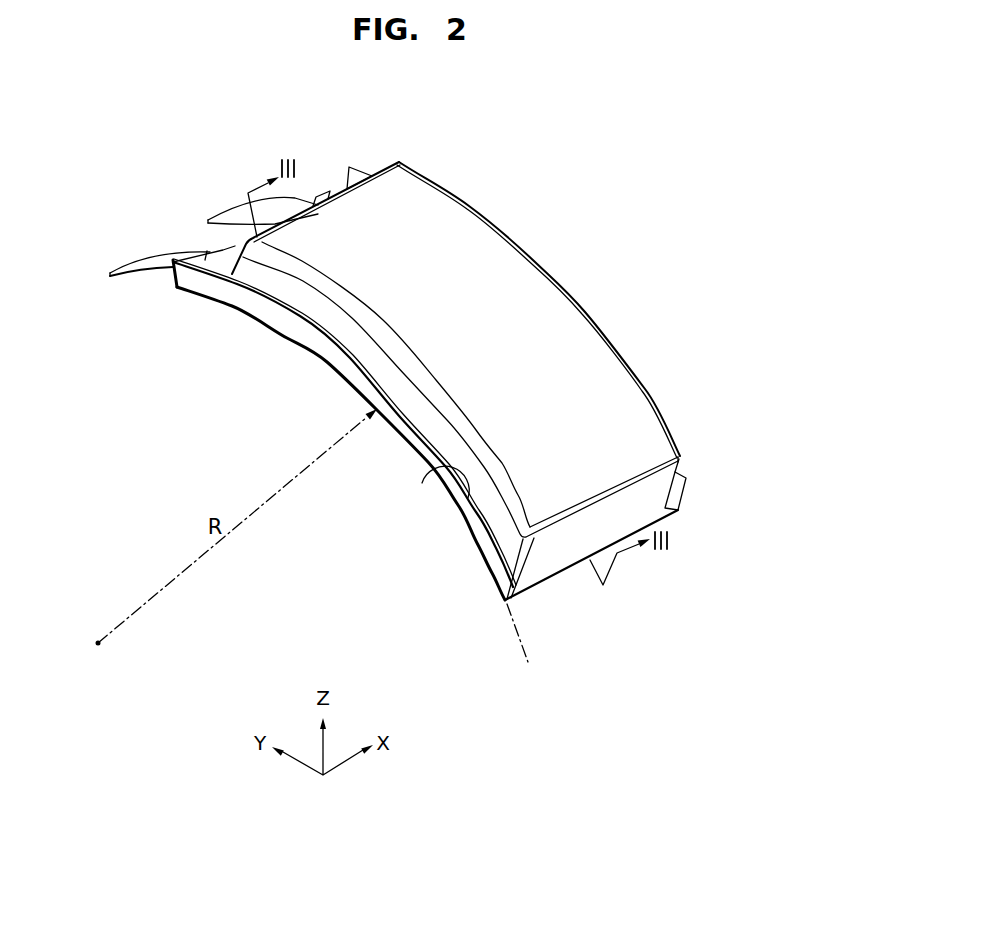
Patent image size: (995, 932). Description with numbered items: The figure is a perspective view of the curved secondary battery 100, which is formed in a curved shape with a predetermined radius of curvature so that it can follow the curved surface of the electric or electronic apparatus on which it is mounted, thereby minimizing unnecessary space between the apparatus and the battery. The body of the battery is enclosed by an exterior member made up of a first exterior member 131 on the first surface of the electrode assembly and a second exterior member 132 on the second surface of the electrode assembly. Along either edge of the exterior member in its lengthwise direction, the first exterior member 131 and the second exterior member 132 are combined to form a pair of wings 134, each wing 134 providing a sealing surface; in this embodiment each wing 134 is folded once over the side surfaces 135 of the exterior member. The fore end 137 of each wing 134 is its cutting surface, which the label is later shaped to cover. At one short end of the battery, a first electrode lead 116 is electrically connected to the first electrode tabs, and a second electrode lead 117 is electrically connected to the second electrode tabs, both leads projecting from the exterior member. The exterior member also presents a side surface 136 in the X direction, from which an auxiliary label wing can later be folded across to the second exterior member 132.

The curved secondary battery 100 is at (692, 210).
The first electrode lead 116 is at (223, 212).
The second electrode lead 117 is at (122, 263).
The first exterior member 131 is at (535, 290).
The second exterior member 132 is at (318, 362).
The wing 134 is at (263, 307).
The side surface of the exterior member 135 is at (500, 532).
The side surface of the exterior member 136 is at (560, 553).
The fore end 137 is at (422, 483).